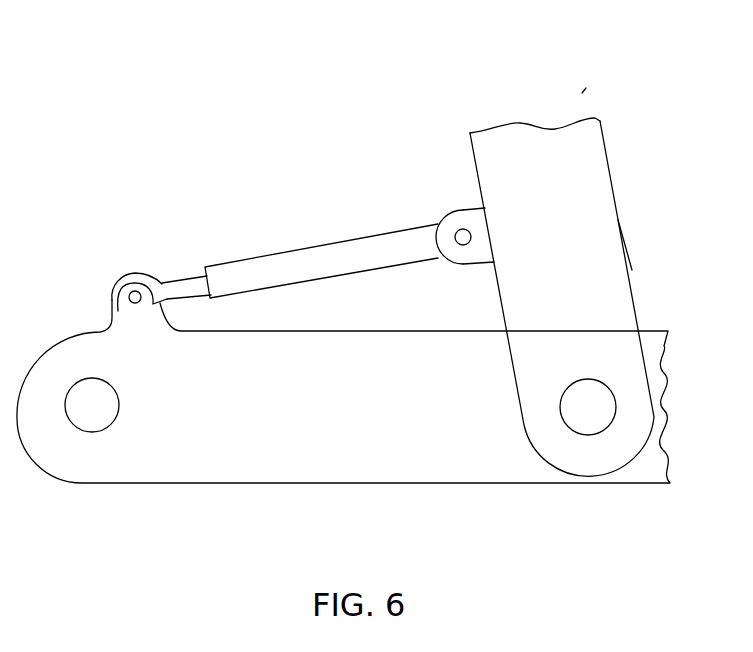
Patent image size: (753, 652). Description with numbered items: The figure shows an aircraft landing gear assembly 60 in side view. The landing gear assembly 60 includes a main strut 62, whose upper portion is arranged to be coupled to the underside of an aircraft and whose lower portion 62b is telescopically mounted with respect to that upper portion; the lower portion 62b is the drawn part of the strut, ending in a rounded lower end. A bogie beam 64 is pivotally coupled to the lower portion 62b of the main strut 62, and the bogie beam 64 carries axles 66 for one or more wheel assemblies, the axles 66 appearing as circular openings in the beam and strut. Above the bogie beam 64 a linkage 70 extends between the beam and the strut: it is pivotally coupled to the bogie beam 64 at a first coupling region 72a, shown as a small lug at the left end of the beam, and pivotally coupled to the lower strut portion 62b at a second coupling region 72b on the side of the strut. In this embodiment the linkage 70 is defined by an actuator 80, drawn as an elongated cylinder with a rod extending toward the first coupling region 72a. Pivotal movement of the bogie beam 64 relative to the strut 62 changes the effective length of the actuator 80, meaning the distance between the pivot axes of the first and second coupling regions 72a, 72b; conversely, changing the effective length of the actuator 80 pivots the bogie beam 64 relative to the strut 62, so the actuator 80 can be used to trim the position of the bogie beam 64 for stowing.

The landing gear assembly 60 is at (586, 88).
The main strut 62 is at (618, 154).
The lower portion 62b is at (627, 242).
The bogie beam 64 is at (368, 485).
The axles 66 is at (125, 403).
The linkage 70 is at (330, 223).
The first coupling region 72a is at (118, 284).
The second coupling region 72b is at (458, 208).
The actuator 80 is at (257, 253).